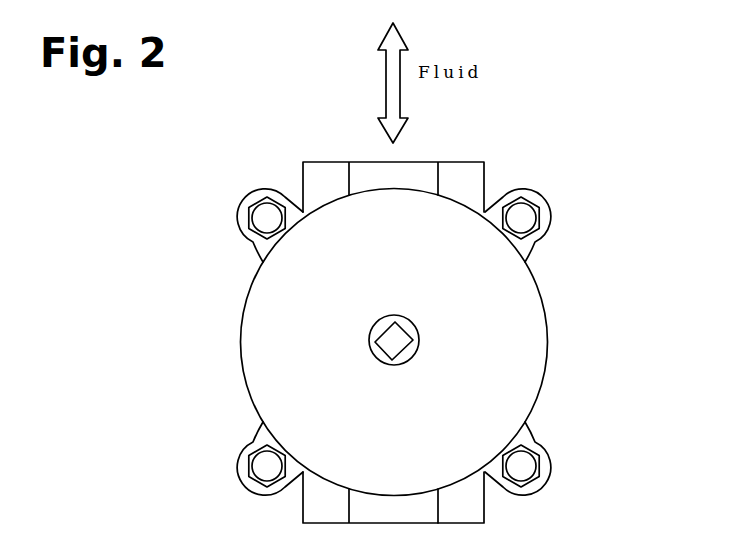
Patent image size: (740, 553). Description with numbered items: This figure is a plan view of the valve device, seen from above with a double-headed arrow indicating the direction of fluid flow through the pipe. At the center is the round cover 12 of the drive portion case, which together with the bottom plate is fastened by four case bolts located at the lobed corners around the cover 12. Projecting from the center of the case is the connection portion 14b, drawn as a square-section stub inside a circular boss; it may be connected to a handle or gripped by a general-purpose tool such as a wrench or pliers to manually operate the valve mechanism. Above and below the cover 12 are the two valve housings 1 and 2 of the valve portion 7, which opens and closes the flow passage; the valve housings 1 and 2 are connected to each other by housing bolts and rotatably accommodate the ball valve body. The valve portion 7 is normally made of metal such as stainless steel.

The valve housing 1 is at (362, 164).
The valve housing 2 is at (386, 519).
The valve portion 7 is at (475, 512).
The cover 12 is at (257, 296).
The connection portion 14b is at (400, 334).